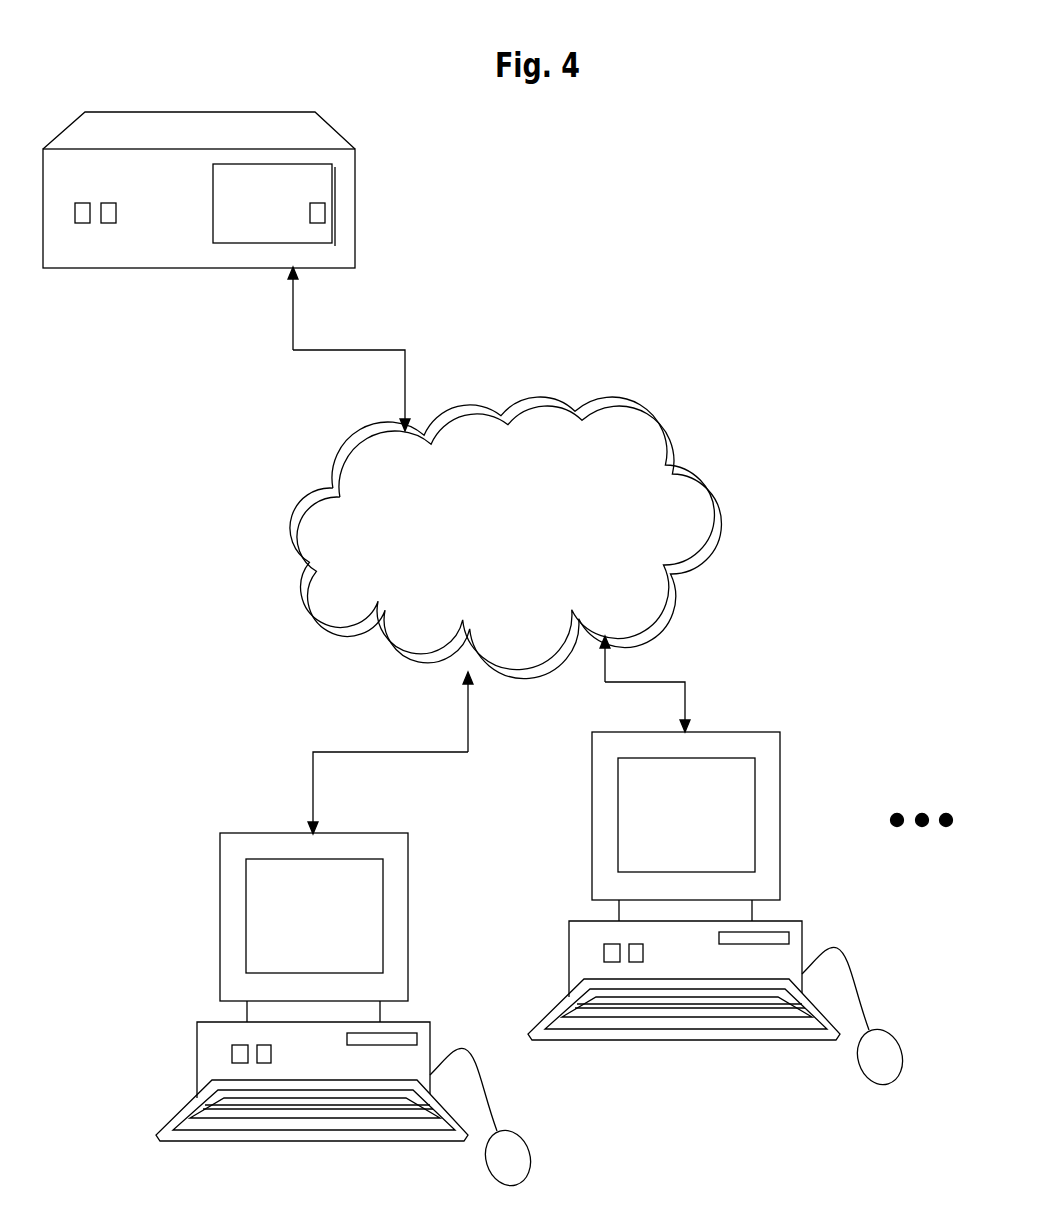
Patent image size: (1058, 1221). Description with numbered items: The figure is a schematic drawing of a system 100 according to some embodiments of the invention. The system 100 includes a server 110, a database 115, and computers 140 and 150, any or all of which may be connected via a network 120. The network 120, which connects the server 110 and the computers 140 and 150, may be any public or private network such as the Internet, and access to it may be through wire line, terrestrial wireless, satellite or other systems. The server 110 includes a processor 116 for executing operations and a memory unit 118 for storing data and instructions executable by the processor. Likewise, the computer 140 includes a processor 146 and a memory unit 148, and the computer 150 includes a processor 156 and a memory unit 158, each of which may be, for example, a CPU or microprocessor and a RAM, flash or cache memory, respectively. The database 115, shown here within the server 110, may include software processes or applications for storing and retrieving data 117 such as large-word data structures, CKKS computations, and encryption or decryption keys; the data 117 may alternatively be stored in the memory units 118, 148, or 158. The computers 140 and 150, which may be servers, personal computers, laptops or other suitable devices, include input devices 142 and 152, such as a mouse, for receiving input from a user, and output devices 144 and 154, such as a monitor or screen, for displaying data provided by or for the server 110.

The system 100 is at (796, 272).
The server 110 is at (216, 140).
The database 115 is at (230, 208).
The processor 116 is at (83, 223).
The data 117 is at (318, 223).
The memory unit 118 is at (108, 203).
The network 120 is at (505, 538).
The computer 140 is at (270, 830).
The input device 142 is at (521, 1135).
The output device 144 is at (307, 910).
The processor 146 is at (232, 1052).
The memory unit 148 is at (255, 1045).
The computer 150 is at (773, 732).
The input device 152 is at (891, 1031).
The output device 154 is at (680, 813).
The processor 156 is at (604, 955).
The memory unit 158 is at (632, 948).